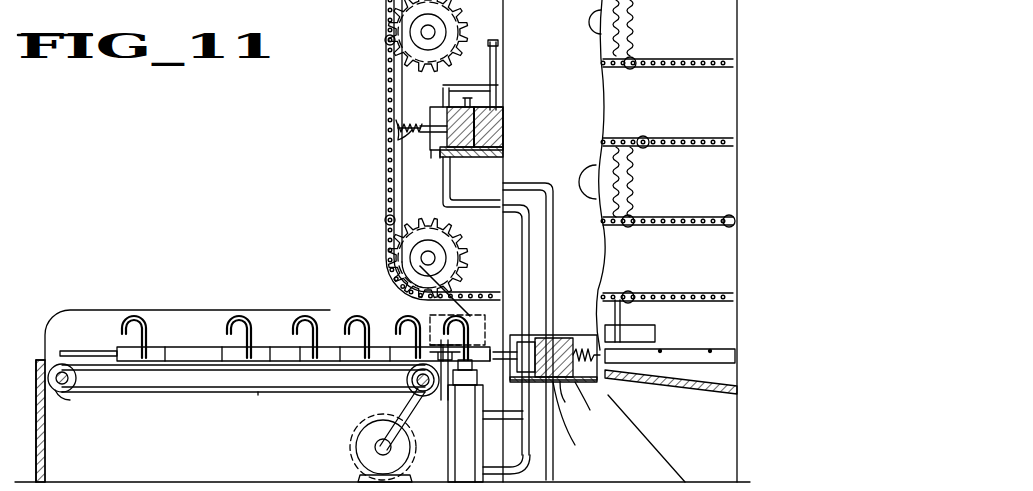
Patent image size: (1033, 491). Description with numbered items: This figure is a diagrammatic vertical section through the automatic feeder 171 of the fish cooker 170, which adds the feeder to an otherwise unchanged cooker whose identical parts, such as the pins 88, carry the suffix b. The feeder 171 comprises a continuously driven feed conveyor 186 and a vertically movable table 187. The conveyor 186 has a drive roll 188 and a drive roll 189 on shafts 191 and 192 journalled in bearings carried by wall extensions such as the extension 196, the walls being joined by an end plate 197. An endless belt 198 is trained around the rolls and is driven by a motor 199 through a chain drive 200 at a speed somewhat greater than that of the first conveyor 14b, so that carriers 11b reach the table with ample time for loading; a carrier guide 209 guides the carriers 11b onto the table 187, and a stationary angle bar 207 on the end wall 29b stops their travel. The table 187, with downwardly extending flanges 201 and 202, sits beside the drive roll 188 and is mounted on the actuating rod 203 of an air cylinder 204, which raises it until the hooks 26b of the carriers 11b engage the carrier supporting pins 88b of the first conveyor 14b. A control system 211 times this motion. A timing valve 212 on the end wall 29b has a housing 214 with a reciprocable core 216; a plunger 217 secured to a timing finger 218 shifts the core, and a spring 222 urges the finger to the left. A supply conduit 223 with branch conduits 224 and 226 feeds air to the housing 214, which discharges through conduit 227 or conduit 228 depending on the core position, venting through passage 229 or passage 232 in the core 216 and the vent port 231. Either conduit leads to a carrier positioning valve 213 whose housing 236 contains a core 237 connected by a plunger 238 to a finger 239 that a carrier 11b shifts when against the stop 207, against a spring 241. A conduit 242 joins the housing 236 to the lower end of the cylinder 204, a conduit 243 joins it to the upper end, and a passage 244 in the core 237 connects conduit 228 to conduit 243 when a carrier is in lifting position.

The fish cooker 170 is at (312, 101).
The first conveyor 14b is at (383, 190).
The pins 88 is at (727, 219).
The carrier supporting pins 88b is at (388, 38).
The end wall 29b is at (507, 24).
The hooks 26b is at (247, 322).
The carriers 11b is at (230, 344).
The carrier guide 209 is at (92, 340).
The feed conveyor 186 is at (224, 393).
The endless belt 198 is at (258, 393).
The drive roll 189 is at (70, 381).
The shaft 192 is at (60, 390).
The automatic feeder 171 is at (160, 398).
The extension 196 is at (132, 453).
The end plate 197 is at (40, 464).
The drive roll 188 is at (407, 383).
The drive shaft 191 is at (414, 396).
The chain drive 200 is at (378, 430).
The motor 199 is at (362, 458).
The flange 201 is at (444, 392).
The actuating rod 203 is at (434, 348).
The vertically movable table 187 is at (440, 340).
The flange 202 is at (483, 392).
The air cylinder 204 is at (488, 465).
The conduit 242 is at (532, 472).
The supply conduit 223 is at (500, 44).
The branch conduit 224 is at (440, 92).
The branch conduit 226 is at (500, 92).
The vent port 231 is at (470, 100).
The passage 232 is at (506, 112).
The timing valve 212 is at (505, 126).
The housing 214 is at (505, 140).
The timing finger 218 is at (400, 108).
The spring 222 is at (396, 146).
The plunger 217 is at (395, 157).
The core 216 is at (450, 134).
The passage 229 is at (471, 182).
The control system 211 is at (576, 160).
The conduit 227 is at (528, 248).
The conduit 228 is at (552, 265).
The angle bar 207 is at (495, 348).
The finger 239 is at (520, 355).
The plunger 238 is at (532, 355).
The spring 241 is at (600, 356).
The carrier positioning valve 213 is at (602, 382).
The housing 236 is at (612, 400).
The core 237 is at (580, 385).
The passage 244 is at (562, 404).
The conduit 243 is at (570, 436).